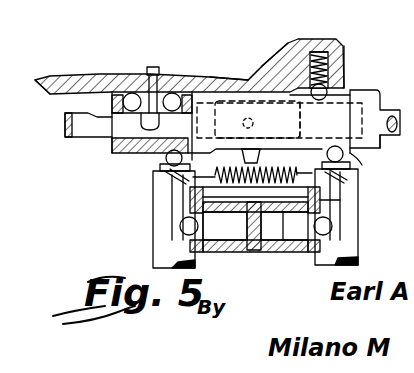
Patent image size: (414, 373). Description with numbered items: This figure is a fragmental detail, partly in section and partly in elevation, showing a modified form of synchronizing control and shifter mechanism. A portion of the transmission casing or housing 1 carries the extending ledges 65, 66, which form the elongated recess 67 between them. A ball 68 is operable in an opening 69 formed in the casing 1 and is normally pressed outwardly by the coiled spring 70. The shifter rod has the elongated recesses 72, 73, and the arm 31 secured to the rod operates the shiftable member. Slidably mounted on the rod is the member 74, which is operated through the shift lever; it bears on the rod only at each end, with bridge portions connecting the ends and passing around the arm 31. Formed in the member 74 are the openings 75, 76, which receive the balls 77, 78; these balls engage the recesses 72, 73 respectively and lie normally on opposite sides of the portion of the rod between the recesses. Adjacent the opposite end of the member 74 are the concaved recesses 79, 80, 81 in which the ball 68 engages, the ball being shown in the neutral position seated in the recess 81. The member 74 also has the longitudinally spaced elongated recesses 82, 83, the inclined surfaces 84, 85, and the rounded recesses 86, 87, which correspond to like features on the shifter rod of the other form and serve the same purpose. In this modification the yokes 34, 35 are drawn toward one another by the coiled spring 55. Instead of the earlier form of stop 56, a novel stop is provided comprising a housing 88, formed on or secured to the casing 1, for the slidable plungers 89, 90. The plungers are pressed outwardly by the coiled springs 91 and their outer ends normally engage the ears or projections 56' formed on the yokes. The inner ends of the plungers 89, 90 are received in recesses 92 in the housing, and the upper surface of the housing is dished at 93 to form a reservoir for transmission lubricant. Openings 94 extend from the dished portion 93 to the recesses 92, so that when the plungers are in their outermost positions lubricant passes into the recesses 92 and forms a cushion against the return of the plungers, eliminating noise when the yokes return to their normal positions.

The transmission casing or housing 1 is at (344, 75).
The arm 31 is at (273, 108).
The yoke 34 is at (157, 247).
The yoke 35 is at (350, 247).
The coiled spring 55 is at (288, 247).
The stop 56 is at (214, 193).
The ears or projections 56' is at (363, 207).
The extending ledge 65 is at (62, 96).
The extending ledge 66 is at (248, 86).
The elongated recess 67 is at (173, 93).
The ball 68 is at (319, 101).
The opening 69 is at (322, 58).
The coiled spring 70 is at (326, 58).
The elongated recess 72 is at (100, 121).
The elongated recess 73 is at (215, 80).
The member 74 is at (370, 104).
The opening 75 is at (130, 96).
The opening 76 is at (160, 70).
The ball 77 is at (145, 96).
The ball 78 is at (186, 96).
The concaved recess 79 is at (278, 91).
The concaved recess 80 is at (345, 109).
The concaved recess 81 is at (327, 99).
The elongated recess 82 is at (362, 157).
The elongated recess 83 is at (152, 154).
The inclined surface 84 is at (366, 146).
The inclined surface 85 is at (228, 111).
The rounded recess 86 is at (294, 120).
The rounded recess 87 is at (168, 170).
The housing 88 is at (241, 252).
The slidable plunger 89 is at (342, 225).
The slidable plunger 90 is at (180, 226).
The coiled spring 91 is at (212, 252).
The recess 92 is at (252, 252).
The dished or recessed portion 93 is at (346, 185).
The opening 94 is at (252, 225).